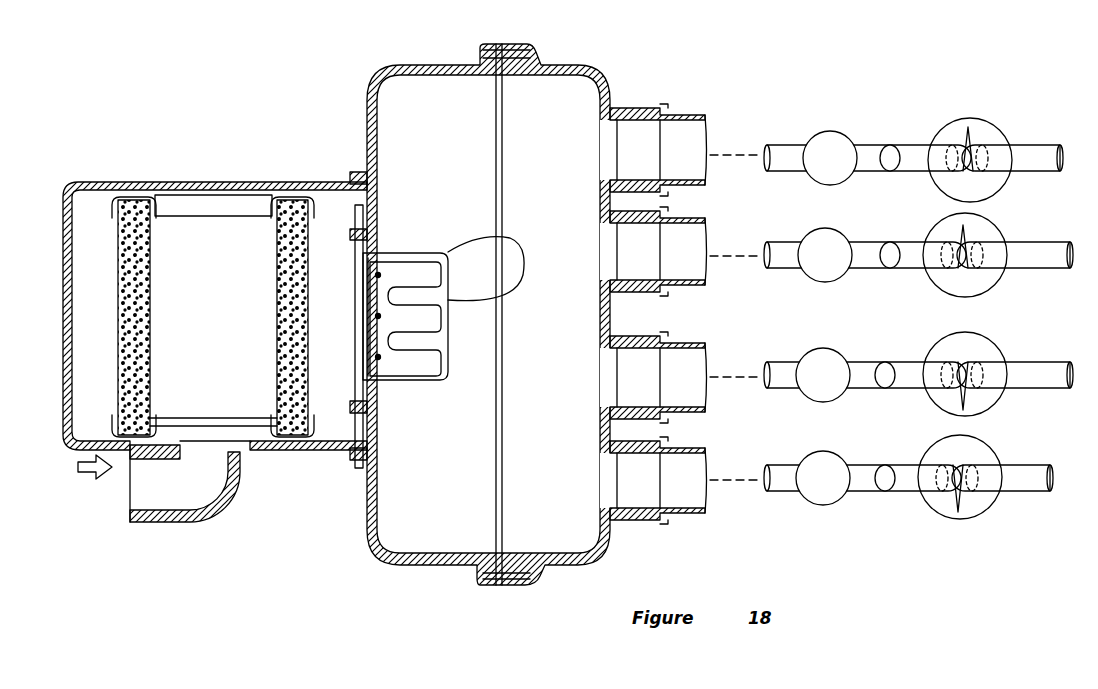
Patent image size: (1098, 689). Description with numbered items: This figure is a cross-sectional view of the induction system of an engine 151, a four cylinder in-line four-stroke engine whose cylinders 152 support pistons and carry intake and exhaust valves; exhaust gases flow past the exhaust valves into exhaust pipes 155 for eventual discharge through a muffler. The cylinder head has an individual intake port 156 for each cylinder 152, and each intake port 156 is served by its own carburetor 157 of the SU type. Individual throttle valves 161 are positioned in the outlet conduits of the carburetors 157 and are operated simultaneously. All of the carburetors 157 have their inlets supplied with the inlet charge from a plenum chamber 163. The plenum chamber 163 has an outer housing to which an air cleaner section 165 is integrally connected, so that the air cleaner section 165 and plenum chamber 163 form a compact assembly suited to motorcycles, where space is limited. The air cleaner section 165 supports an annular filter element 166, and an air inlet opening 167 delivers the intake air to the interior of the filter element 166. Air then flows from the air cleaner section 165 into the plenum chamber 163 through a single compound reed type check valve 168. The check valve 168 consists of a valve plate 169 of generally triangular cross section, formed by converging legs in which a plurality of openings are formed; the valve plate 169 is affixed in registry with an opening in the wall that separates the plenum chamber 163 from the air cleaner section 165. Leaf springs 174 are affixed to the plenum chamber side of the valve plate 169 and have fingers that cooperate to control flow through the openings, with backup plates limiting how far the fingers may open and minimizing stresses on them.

The engine 151 is at (921, 311).
The cylinders 152 is at (975, 520).
The exhaust pipes 155 is at (1038, 172).
The intake ports 156 is at (923, 175).
The carburetors 157 is at (823, 140).
The throttle valves 161 is at (890, 147).
The plenum chamber 163 is at (582, 97).
The air cleaner section 165 is at (197, 170).
The filter element 166 is at (135, 197).
The air inlet opening 167 is at (145, 500).
The reed type check valve 168 is at (409, 230).
The valve plate 169 is at (355, 325).
The leaf springs 174 is at (506, 263).